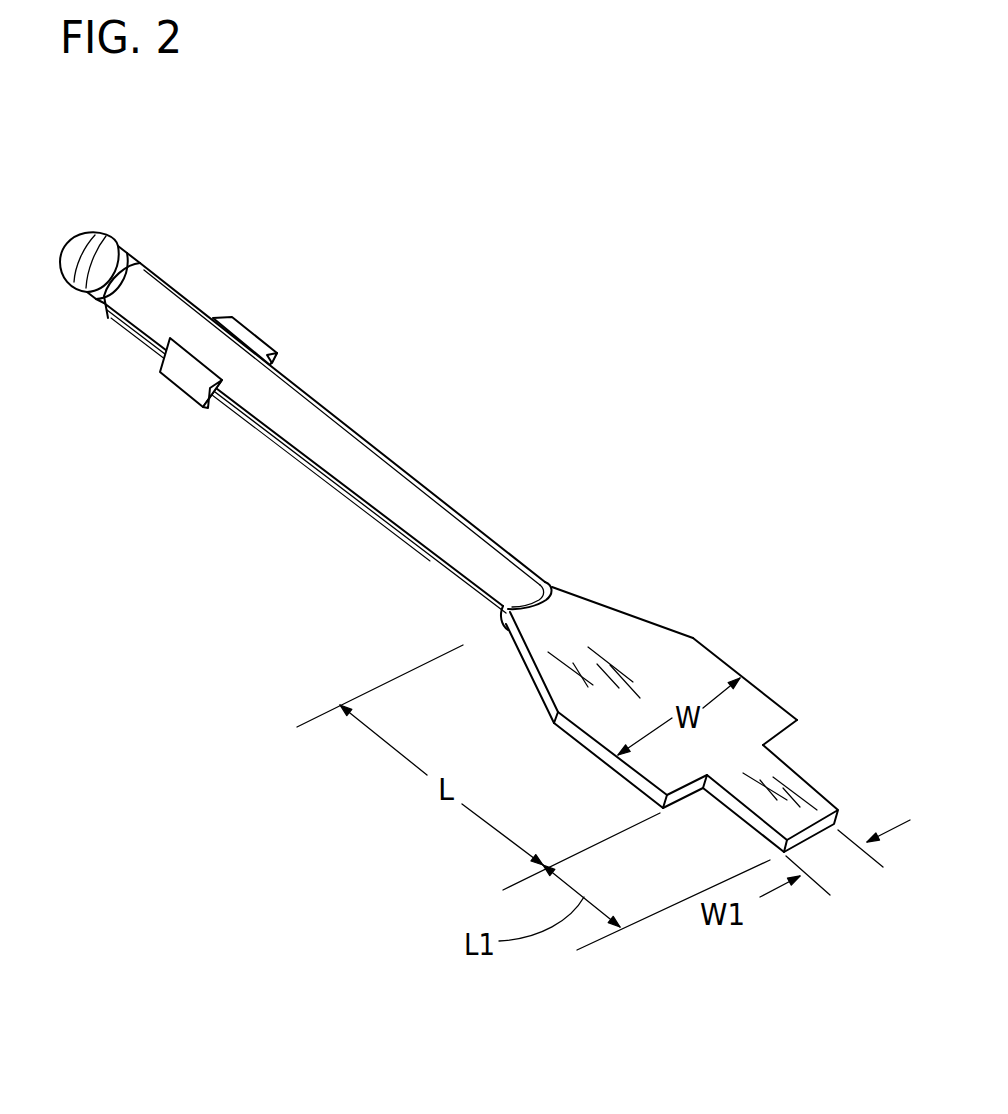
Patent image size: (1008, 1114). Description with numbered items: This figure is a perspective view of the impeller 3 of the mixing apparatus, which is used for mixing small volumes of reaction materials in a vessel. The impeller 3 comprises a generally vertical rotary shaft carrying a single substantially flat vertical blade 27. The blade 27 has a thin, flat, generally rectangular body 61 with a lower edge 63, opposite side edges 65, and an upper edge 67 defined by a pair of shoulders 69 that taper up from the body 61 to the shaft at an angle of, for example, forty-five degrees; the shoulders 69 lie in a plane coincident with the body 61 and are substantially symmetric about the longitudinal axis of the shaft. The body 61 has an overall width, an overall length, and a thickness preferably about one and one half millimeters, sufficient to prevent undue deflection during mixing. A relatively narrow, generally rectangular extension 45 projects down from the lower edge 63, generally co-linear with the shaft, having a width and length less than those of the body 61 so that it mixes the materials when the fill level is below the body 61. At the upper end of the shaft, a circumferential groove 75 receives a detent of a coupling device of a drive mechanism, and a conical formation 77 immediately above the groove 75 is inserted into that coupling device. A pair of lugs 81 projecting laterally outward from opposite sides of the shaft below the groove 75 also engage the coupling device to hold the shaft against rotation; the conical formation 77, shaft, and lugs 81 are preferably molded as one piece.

The impeller 3 is at (405, 417).
The conical formation 77 is at (90, 231).
The circumferential groove 75 is at (124, 255).
The lugs 81 is at (258, 334).
The upper edge 67 is at (597, 612).
The shoulders 69 is at (651, 622).
The blade 27 is at (729, 655).
The body 61 is at (721, 712).
The side edges 65 is at (781, 702).
The lower edge 63 is at (786, 742).
The extension 45 is at (809, 780).